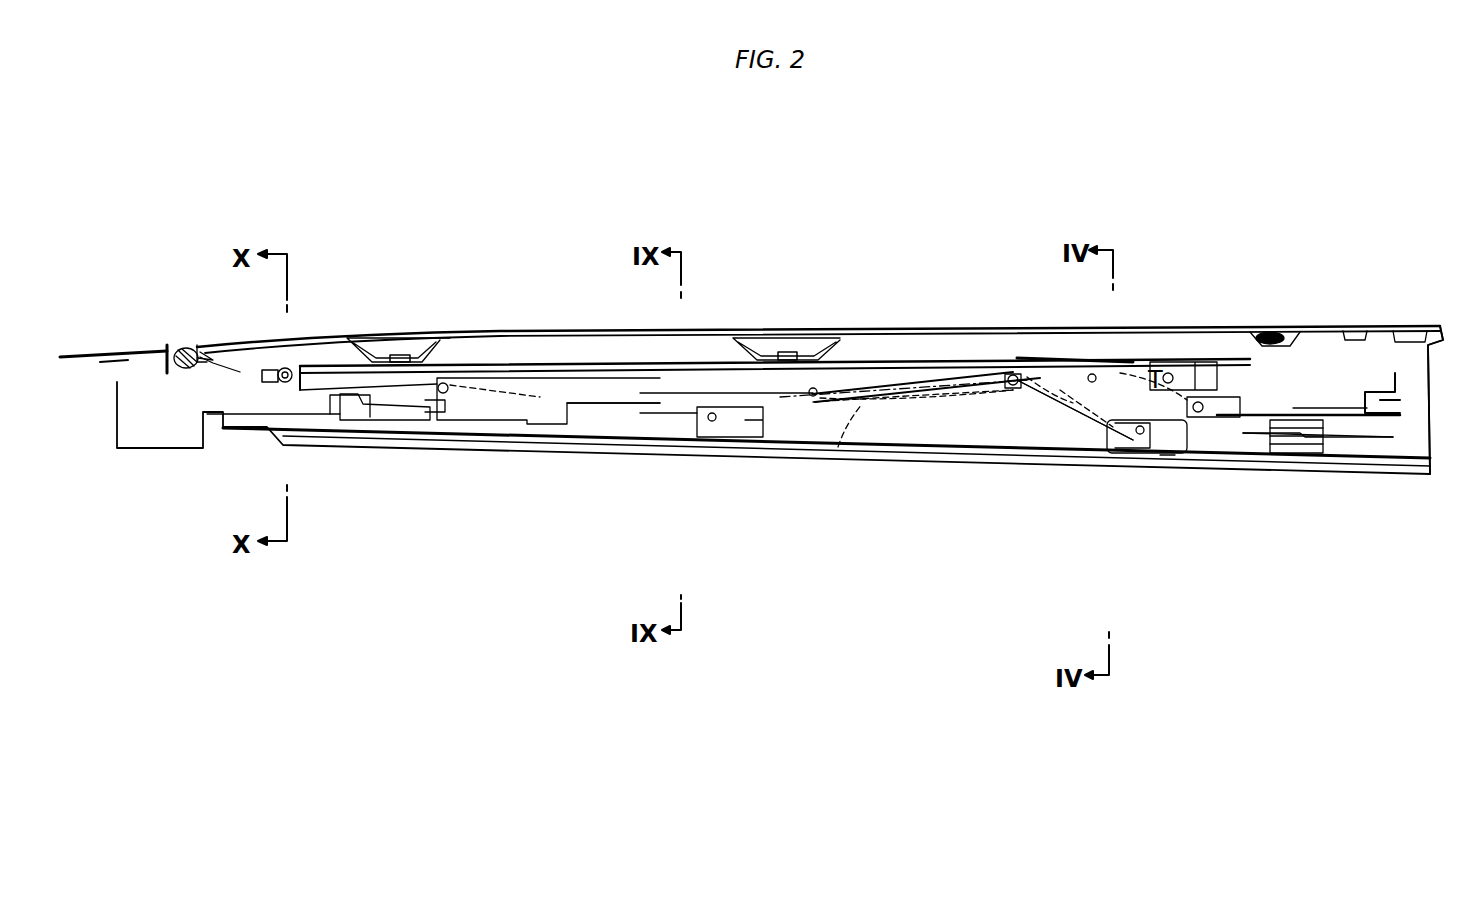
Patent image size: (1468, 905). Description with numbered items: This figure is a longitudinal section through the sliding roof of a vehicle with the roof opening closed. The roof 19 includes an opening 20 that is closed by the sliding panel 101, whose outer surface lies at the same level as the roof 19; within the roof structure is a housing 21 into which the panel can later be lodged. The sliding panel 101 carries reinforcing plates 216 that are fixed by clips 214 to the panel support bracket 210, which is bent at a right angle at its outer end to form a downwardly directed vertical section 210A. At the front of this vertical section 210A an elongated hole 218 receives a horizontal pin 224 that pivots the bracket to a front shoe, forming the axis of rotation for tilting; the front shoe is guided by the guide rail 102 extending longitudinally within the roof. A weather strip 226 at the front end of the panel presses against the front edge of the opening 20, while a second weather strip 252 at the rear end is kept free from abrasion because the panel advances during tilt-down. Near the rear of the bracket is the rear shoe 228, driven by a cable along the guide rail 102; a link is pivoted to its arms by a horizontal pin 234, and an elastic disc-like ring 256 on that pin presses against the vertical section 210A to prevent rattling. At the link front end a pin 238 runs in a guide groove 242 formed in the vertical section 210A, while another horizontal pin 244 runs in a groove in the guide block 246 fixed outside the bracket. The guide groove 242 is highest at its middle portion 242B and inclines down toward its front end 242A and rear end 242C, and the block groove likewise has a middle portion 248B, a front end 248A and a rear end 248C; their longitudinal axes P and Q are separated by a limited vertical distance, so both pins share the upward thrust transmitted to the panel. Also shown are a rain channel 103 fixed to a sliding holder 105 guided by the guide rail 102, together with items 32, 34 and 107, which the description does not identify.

The roof 19 is at (97, 350).
The opening 20 is at (170, 347).
The housing 21 is at (1413, 366).
The pin 32 is at (432, 378).
The roller 34 is at (457, 390).
The sliding panel 101 is at (515, 330).
The guide rail 102 is at (1253, 450).
The rain channel 103 is at (1377, 395).
The holder 105 is at (1330, 450).
The slider 107 is at (615, 395).
The panel support bracket 210 is at (630, 366).
The vertical section 210A is at (650, 378).
The clips 214 is at (400, 354).
The reinforcing plates 216 is at (440, 348).
The elongated hole 218 is at (273, 380).
The horizontal pin 224 is at (288, 368).
The weather strip 226 is at (239, 373).
The rear shoe 228 is at (1187, 432).
The horizontal pin 234 is at (1137, 442).
The pin 238 is at (1018, 378).
The guide groove 242 is at (918, 352).
The front end 242A is at (813, 388).
The middle portion 242B is at (1018, 378).
The rear end 242C is at (1093, 485).
The horizontal pin 244 is at (1055, 358).
The guide block 246 is at (862, 378).
The front end 248A is at (838, 447).
The middle portion 248B is at (1092, 480).
The rear end 248C is at (1122, 362).
The weather strip 252 is at (1275, 338).
The disc-like ring 256 is at (1160, 455).
The longitudinal axis P is at (740, 477).
The longitudinal axis Q is at (800, 457).